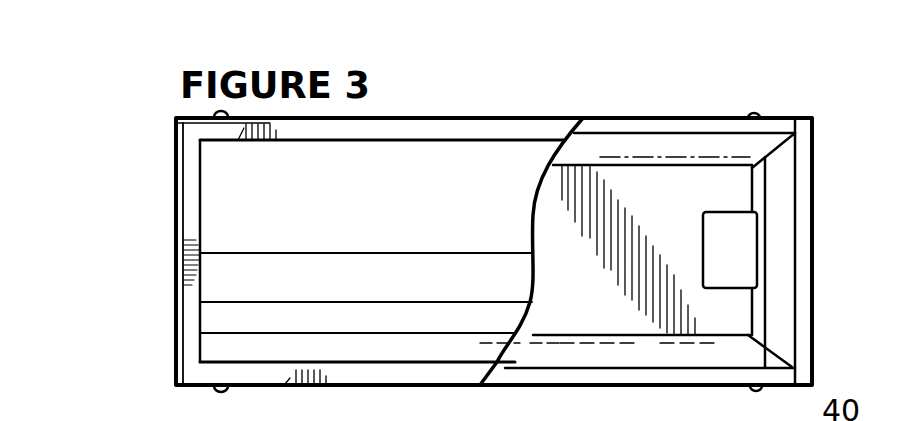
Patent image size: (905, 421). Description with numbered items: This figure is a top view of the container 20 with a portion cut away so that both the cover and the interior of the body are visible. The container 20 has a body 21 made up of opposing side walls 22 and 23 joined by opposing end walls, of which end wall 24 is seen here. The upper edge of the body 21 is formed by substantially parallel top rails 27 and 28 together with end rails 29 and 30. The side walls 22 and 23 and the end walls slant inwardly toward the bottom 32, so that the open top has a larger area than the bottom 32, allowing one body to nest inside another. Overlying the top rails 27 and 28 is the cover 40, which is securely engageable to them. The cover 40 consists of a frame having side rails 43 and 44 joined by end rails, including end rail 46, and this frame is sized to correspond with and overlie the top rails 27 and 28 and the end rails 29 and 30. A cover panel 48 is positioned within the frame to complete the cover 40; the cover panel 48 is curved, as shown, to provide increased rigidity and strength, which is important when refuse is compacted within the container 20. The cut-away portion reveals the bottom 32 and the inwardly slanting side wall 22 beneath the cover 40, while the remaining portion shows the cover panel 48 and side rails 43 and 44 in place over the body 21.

The container 20 is at (872, 270).
The body 21 is at (780, 111).
The side wall 22 is at (630, 332).
The side wall 23 is at (640, 157).
The end wall 24 is at (788, 183).
The top rail 27 is at (682, 375).
The top rail 28 is at (702, 127).
The end rail 29 is at (802, 323).
The end rail 30 is at (174, 297).
The bottom 32 is at (676, 246).
The cover 40 is at (478, 206).
The side rail 43 is at (373, 375).
The side rail 44 is at (412, 117).
The end rail 46 is at (176, 210).
The cover panel 48 is at (523, 217).